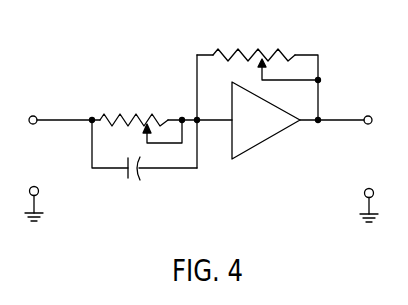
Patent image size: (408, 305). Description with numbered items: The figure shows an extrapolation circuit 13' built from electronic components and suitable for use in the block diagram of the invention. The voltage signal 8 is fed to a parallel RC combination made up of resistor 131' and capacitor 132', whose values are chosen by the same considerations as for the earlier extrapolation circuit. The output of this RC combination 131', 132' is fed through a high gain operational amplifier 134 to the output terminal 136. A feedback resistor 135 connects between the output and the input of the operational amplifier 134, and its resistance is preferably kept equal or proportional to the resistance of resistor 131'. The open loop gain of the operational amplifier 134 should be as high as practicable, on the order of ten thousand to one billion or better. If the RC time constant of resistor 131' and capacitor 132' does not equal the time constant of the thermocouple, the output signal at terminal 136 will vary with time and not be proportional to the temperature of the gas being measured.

The voltage signal 8 is at (70, 120).
The extrapolation circuit 13' is at (228, 115).
The resistor 131' is at (141, 113).
The capacitor 132' is at (144, 162).
The high gain operational amplifier 134 is at (276, 136).
The feedback resistor 135 is at (285, 51).
The output terminal 136 is at (371, 117).